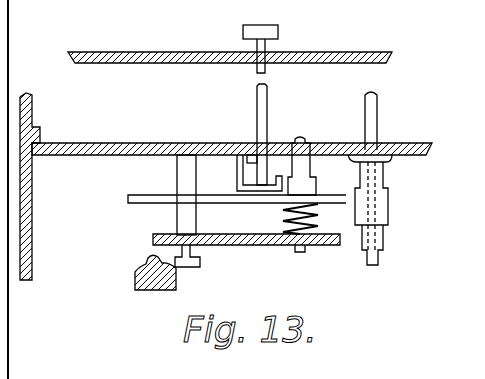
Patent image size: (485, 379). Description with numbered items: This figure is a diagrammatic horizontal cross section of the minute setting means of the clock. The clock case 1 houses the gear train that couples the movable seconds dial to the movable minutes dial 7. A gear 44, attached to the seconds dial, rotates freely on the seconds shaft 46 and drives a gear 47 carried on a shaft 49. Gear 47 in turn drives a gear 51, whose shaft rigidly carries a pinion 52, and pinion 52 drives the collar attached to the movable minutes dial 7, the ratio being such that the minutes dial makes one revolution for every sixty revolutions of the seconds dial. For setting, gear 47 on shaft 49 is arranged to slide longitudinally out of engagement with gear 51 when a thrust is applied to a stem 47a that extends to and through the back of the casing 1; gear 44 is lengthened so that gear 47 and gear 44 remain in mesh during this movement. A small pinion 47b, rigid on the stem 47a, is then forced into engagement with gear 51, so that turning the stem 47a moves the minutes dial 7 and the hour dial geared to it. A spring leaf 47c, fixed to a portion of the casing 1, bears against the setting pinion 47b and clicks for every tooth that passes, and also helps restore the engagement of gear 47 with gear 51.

The clock case 1 is at (125, 62).
The movable minutes dial 7 is at (152, 284).
The gear 44 is at (378, 208).
The shaft 46 is at (378, 117).
The gear 47 is at (340, 199).
The stem 47a is at (257, 98).
The pinion 47b is at (275, 187).
The spring leaf 47c is at (240, 178).
The shaft 49 is at (297, 250).
The gear 51 is at (140, 200).
The pinion 52 is at (192, 267).